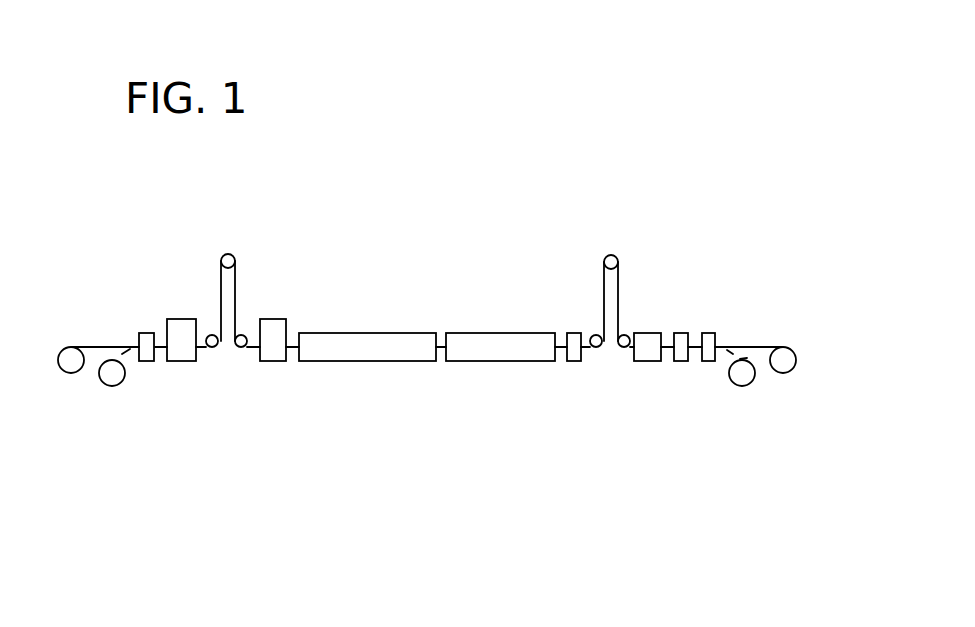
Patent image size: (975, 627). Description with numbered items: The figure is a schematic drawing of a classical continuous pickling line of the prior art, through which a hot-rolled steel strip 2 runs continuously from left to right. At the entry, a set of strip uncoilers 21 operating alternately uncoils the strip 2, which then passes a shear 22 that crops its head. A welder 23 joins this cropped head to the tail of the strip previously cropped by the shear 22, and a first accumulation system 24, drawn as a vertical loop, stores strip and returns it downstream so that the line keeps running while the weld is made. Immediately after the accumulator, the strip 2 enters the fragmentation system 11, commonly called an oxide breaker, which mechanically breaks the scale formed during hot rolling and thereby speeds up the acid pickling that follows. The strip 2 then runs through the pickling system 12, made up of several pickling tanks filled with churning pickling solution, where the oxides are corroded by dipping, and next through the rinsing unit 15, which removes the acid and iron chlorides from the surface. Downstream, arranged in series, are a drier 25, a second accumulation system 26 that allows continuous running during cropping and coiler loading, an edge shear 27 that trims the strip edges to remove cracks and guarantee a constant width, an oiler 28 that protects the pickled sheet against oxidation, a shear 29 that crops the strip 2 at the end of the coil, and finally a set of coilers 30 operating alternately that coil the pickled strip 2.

The steel strip 2 is at (102, 346).
The fragmentation system 11 is at (275, 325).
The pickling system 12 is at (330, 353).
The rinsing unit 15 is at (487, 338).
The strip uncoilers 21 is at (68, 367).
The shear 22 is at (147, 337).
The welder 23 is at (182, 358).
The accumulation system 24 is at (221, 258).
The drier 25 is at (574, 358).
The second accumulation system 26 is at (603, 277).
The edge shear 27 is at (647, 338).
The oiler 28 is at (681, 358).
The shear 29 is at (708, 337).
The coilers 30 is at (783, 370).